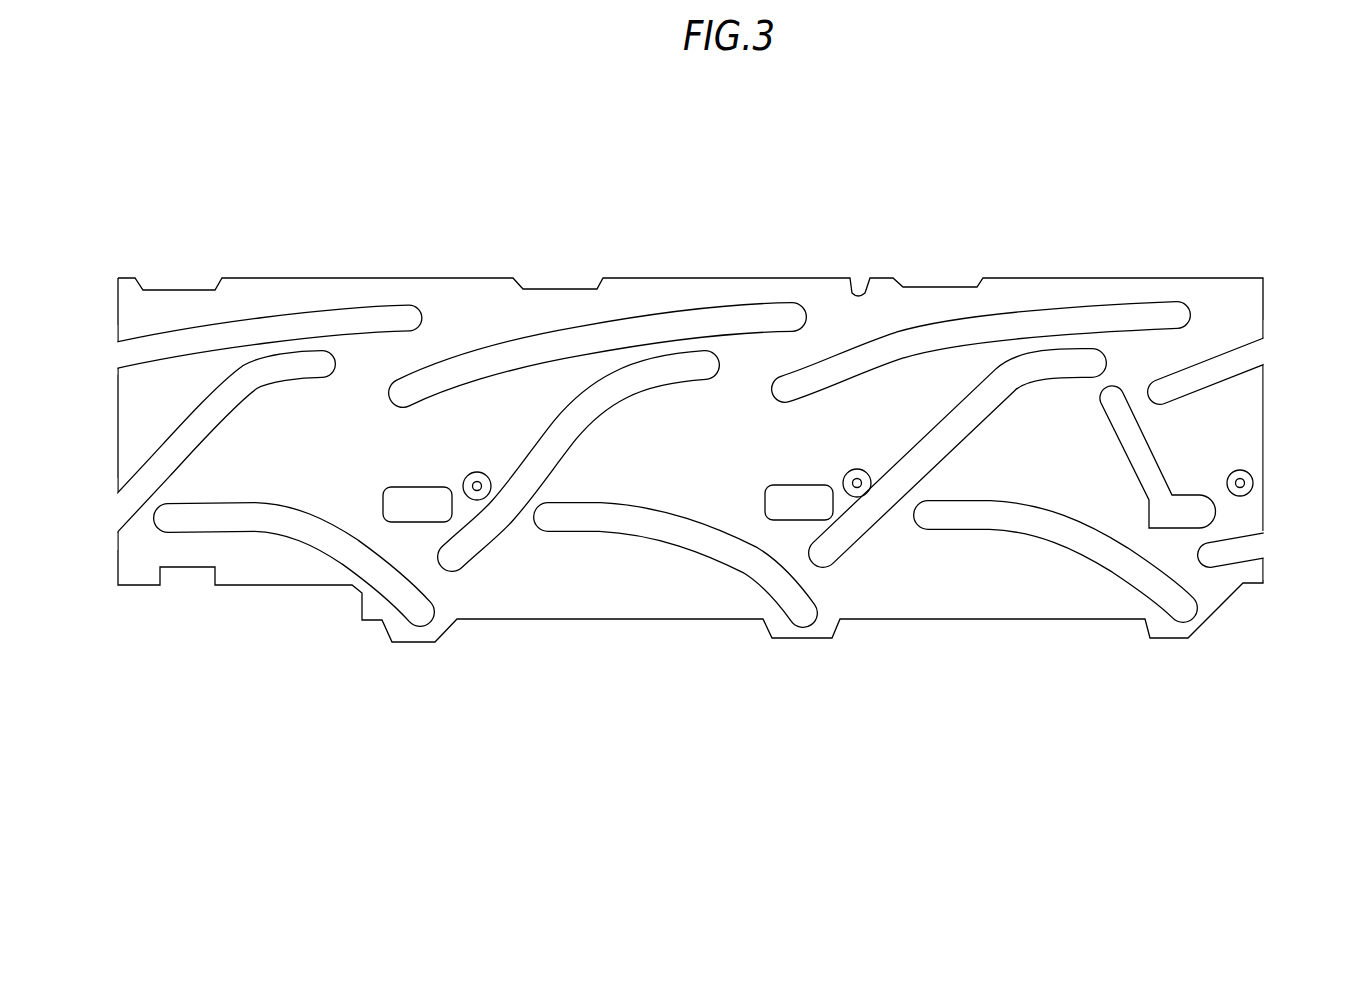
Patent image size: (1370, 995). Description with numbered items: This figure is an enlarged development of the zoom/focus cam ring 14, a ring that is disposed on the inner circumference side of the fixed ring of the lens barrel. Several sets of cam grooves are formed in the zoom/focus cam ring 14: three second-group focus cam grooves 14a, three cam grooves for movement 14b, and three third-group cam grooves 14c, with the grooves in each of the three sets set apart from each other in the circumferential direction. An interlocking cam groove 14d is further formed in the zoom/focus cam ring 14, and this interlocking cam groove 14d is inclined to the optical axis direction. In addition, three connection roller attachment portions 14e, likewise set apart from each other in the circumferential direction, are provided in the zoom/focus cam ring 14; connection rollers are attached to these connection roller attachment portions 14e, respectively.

The zoom/focus cam ring 14 is at (673, 279).
The second-group focus cam grooves 14a is at (303, 308).
The cam grooves for movement 14b is at (335, 350).
The third-group cam grooves 14c is at (280, 537).
The interlocking cam groove 14d is at (1108, 400).
The connection roller attachment portions 14e is at (466, 477).